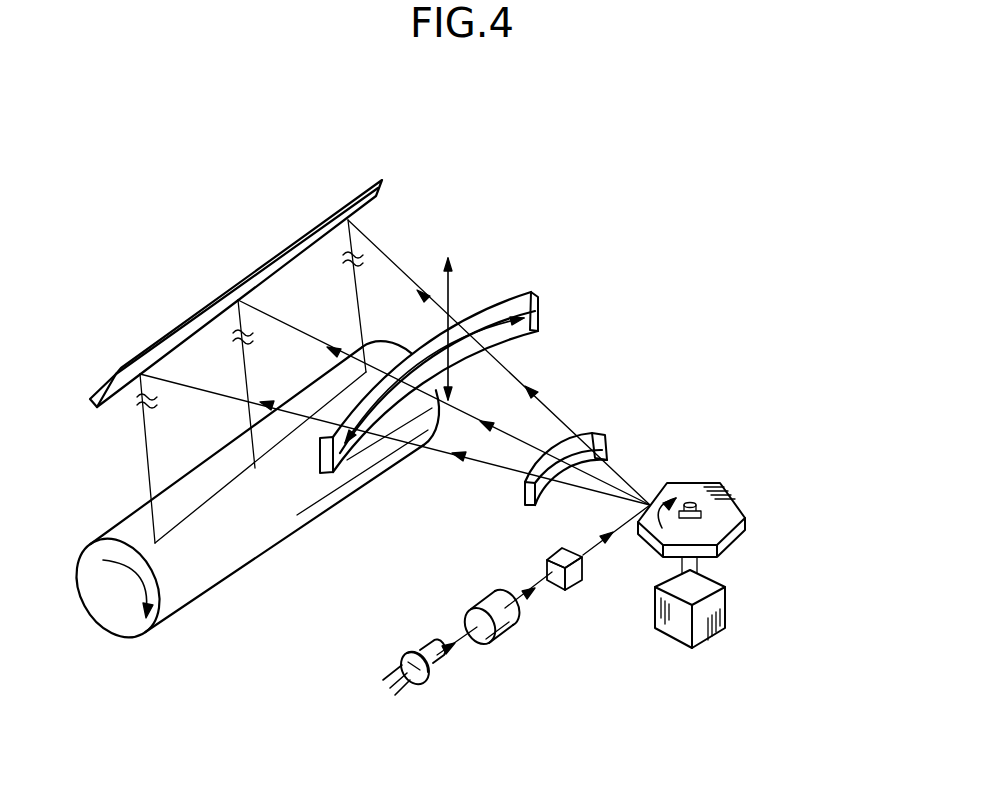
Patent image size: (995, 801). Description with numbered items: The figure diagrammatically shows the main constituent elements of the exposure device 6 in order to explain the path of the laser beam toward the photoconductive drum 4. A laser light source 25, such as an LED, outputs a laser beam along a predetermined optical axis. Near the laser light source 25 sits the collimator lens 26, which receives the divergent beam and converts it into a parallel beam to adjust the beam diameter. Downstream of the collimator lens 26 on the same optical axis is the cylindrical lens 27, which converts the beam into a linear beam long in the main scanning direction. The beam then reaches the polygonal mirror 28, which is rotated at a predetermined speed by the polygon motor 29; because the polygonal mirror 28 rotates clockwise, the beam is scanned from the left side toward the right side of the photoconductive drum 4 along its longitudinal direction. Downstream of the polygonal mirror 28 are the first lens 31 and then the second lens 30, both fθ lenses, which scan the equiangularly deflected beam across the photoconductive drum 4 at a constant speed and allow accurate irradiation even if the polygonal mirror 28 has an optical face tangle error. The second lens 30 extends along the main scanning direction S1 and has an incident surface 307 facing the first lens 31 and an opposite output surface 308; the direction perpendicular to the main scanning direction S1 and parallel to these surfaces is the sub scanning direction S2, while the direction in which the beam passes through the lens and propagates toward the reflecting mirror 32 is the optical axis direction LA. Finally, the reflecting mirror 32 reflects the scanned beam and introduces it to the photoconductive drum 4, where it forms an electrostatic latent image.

The photoconductive drum 4 is at (212, 573).
The exposure device 6 is at (733, 282).
The laser light source 25 is at (430, 677).
The collimator lens 26 is at (522, 615).
The cylindrical lens 27 is at (557, 553).
The polygonal mirror 28 is at (735, 538).
The polygon motor 29 is at (727, 605).
The second lens 30 is at (489, 327).
The incident surface 307 is at (533, 308).
The output surface 308 is at (473, 307).
The first lens 31 is at (607, 445).
The reflecting mirror 32 is at (268, 258).
The optical axis direction LA is at (528, 443).
The main scanning direction S1 is at (493, 320).
The sub scanning direction S2 is at (451, 315).